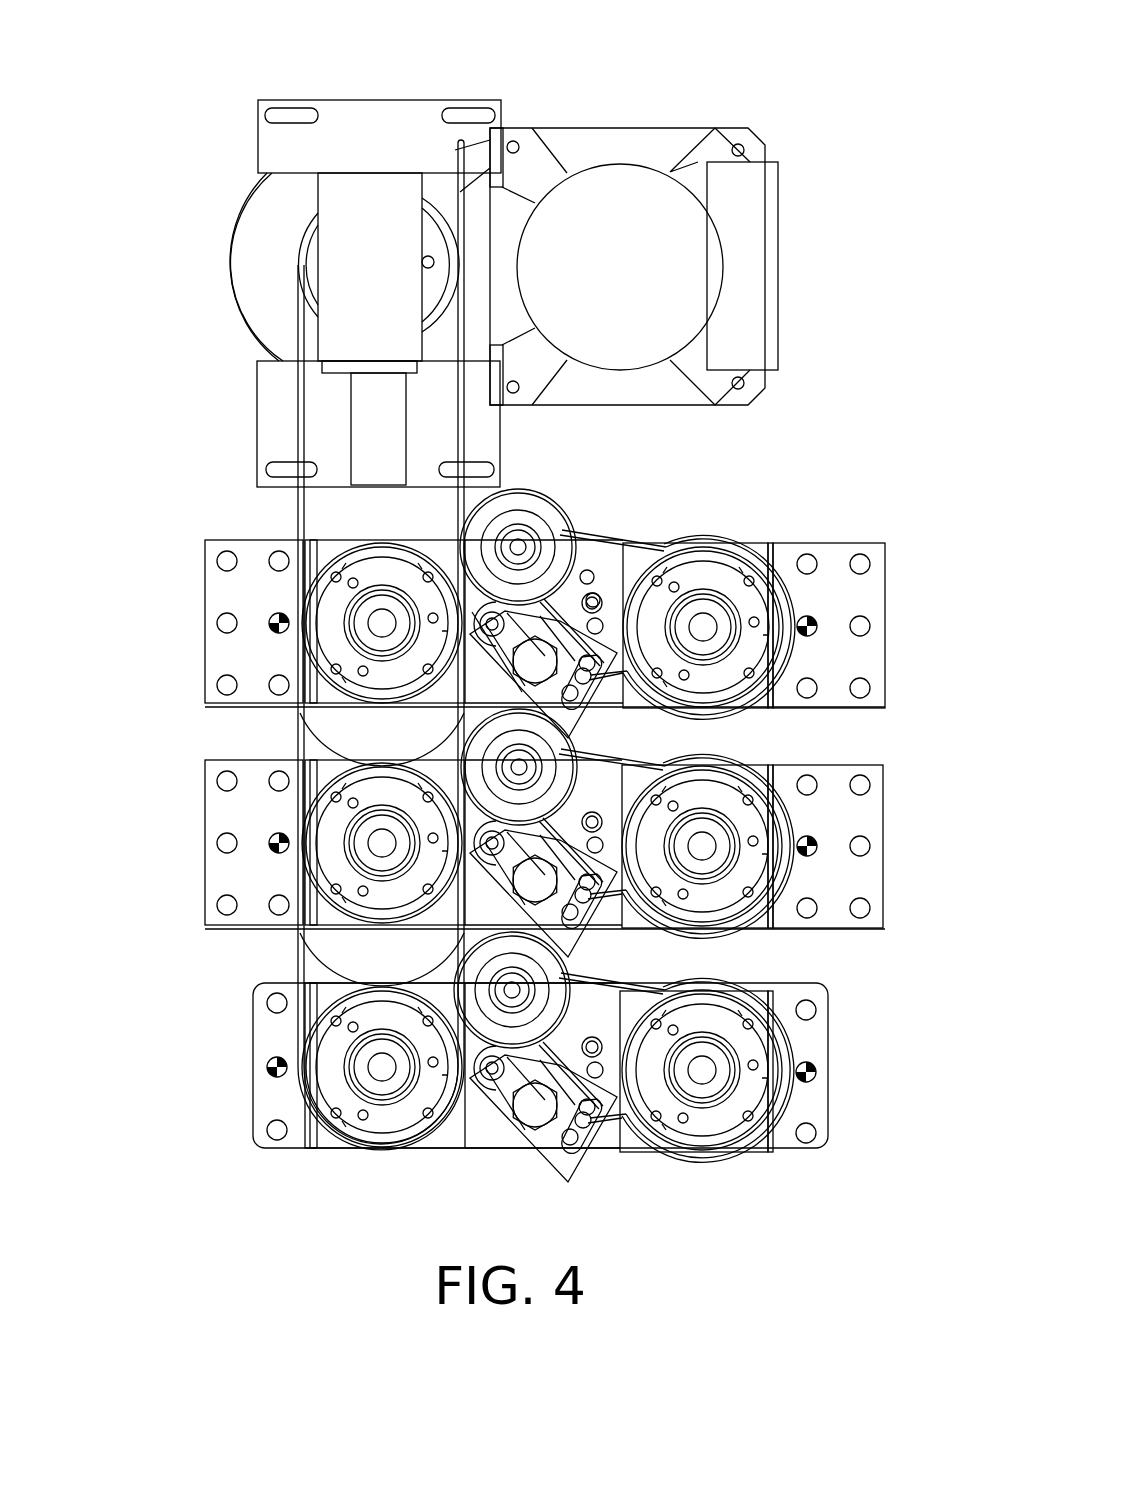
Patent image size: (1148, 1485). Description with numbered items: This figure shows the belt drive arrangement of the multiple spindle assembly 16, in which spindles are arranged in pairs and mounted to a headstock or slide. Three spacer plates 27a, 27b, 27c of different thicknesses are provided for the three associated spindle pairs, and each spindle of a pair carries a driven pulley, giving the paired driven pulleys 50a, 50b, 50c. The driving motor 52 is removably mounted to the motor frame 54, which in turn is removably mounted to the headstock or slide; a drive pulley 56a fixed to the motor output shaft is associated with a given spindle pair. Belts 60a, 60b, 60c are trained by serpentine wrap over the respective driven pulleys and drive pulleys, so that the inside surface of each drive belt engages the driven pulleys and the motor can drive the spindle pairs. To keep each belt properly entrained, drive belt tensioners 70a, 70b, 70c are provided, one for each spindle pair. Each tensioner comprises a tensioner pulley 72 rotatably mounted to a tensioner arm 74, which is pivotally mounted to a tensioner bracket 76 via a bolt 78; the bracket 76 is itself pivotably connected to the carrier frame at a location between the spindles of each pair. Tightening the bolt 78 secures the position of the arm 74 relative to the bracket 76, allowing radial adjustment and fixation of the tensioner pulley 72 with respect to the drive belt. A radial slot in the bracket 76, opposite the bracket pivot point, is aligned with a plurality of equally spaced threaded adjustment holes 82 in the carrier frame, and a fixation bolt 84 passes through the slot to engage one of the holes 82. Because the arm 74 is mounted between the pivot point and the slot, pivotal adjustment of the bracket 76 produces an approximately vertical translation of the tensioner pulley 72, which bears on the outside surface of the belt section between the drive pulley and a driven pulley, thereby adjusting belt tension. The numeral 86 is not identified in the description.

The multiple spindle assembly 16 is at (893, 462).
The spacer plate 27a is at (205, 552).
The spacer plate 27b is at (205, 771).
The spacer plate 27c is at (255, 998).
The driven pulley 50a is at (600, 700).
The driven pulley 50b is at (700, 935).
The driven pulley 50c is at (760, 1143).
The driving motor 52 is at (585, 278).
The motor frame 54 is at (388, 118).
The drive pulley 56a is at (305, 255).
The belt 60a is at (725, 543).
The belt 60b is at (730, 764).
The belt 60c is at (710, 984).
The drive belt tensioner 70a is at (592, 506).
The drive belt tensioner 70b is at (440, 740).
The drive belt tensioner 70c is at (440, 956).
The tensioner pulley 72 is at (522, 490).
The tensioner arm 74 is at (628, 580).
The tensioner bracket 76 is at (655, 680).
The bolt 78 is at (472, 574).
The threaded adjustment holes 82 is at (592, 570).
The fixation bolt 84 is at (600, 665).
The tensioner link 86 is at (625, 610).